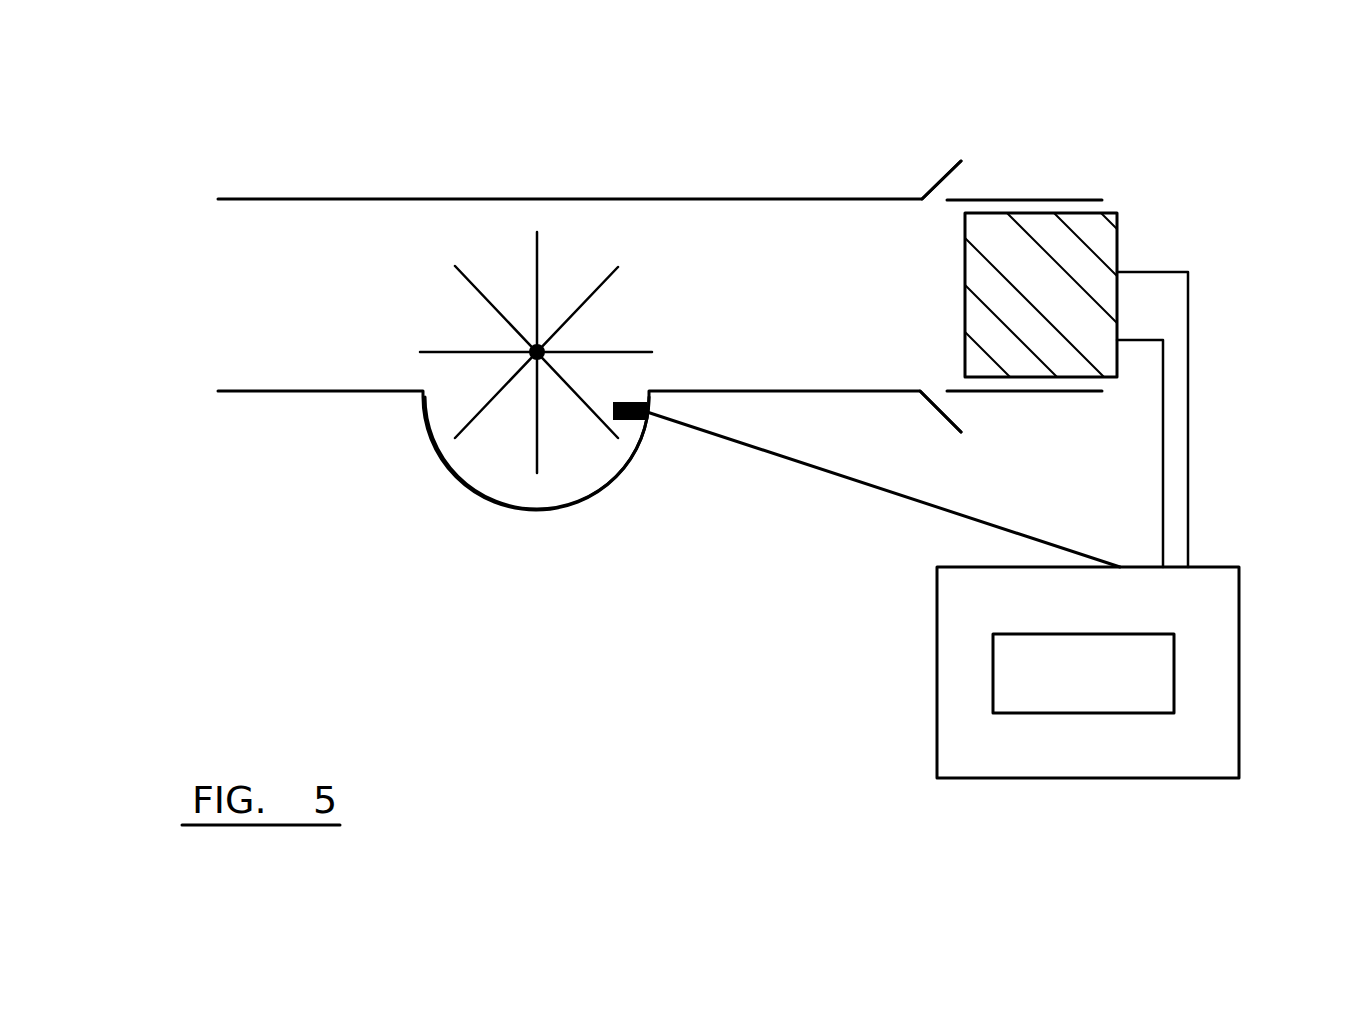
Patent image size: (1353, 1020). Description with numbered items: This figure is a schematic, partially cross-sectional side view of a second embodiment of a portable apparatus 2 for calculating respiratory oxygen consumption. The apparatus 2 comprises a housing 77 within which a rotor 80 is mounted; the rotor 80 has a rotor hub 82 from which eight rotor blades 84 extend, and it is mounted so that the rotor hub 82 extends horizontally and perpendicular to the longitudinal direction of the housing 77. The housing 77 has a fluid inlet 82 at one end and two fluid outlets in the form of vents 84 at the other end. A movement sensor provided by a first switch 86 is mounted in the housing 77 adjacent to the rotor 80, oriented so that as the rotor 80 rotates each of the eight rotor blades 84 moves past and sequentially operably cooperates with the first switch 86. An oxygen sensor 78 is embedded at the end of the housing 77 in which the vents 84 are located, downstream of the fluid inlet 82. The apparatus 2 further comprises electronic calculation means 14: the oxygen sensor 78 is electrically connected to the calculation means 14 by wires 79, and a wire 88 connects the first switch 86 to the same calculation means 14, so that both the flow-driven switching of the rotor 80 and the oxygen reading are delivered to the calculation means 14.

The portable apparatus 2 is at (660, 274).
The electronic calculation means 14 is at (1081, 778).
The housing 77 is at (353, 198).
The oxygen sensor 78 is at (1118, 243).
The wires 79 is at (1163, 458).
The rotor 80 is at (522, 307).
The rotor hub 82 is at (263, 308).
The rotor blades 84 is at (960, 184).
The first switch 86 is at (638, 421).
The wire 88 is at (841, 478).